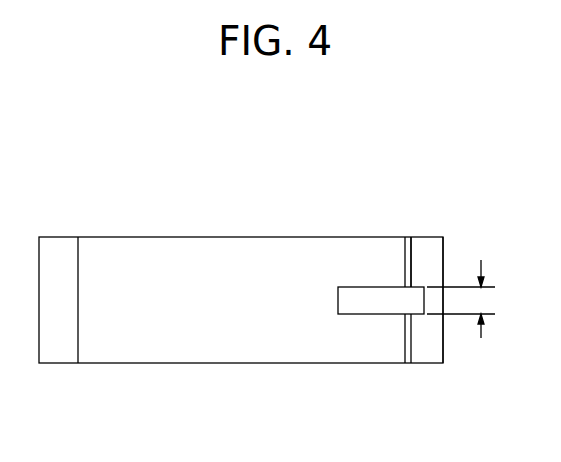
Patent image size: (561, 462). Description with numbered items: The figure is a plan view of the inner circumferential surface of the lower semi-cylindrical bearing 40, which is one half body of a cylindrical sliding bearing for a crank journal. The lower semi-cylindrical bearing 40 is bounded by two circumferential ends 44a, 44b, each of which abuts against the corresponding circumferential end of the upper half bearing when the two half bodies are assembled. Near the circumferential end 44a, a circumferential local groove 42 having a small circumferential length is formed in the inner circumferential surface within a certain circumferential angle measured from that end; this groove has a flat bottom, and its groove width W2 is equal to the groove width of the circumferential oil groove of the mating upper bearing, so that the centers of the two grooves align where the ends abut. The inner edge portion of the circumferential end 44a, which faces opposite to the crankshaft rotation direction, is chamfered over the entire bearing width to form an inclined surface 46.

The lower semi-cylindrical bearing 40 is at (190, 245).
The circumferential local groove 42 is at (357, 292).
The circumferential end 44a is at (435, 253).
The circumferential end 44b is at (62, 245).
The inclined surface 46 is at (408, 248).
The groove width of the circumferential local groove W2 is at (468, 299).